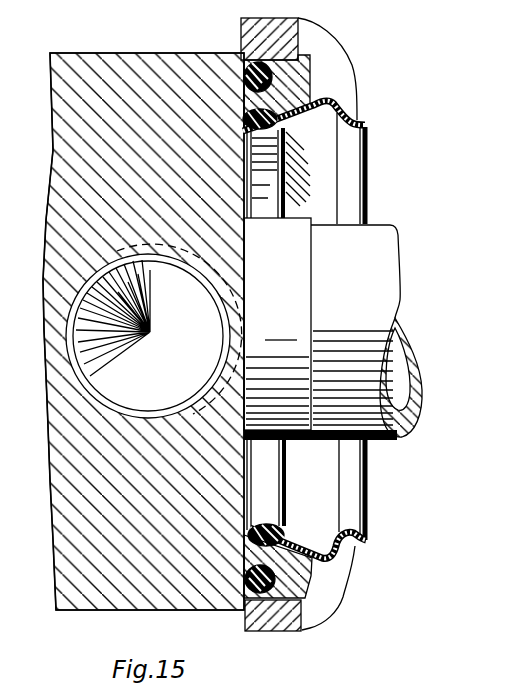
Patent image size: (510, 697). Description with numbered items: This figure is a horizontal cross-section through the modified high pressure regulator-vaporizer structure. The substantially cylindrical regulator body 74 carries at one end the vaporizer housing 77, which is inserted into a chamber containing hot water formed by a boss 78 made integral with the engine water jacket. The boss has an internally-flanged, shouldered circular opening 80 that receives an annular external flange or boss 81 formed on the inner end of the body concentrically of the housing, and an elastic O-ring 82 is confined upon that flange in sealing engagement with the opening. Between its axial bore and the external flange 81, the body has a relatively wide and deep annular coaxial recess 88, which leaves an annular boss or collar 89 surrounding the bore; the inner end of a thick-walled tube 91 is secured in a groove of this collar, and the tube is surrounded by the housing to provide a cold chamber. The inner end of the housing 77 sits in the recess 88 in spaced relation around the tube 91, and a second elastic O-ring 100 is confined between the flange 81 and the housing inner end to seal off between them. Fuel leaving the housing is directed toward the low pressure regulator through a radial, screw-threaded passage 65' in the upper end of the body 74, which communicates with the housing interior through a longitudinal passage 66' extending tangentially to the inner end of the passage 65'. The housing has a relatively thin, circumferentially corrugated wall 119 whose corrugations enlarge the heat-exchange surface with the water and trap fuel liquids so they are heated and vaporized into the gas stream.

The regulator body 74 is at (92, 54).
The O-ring 82 is at (247, 68).
The circular opening 80 is at (300, 51).
The housing wall 119 is at (366, 133).
The annular boss or collar 89 is at (302, 247).
The thick-walled tube 91 is at (393, 259).
The longitudinal passage or port 66' is at (152, 318).
The radial screw-threaded passage or port 65' is at (154, 331).
The annular coaxial recess 88 is at (248, 484).
The vaporizer housing 77 is at (367, 484).
The O-ring 100 is at (290, 538).
The external flange or boss 81 is at (307, 580).
The boss 78 is at (276, 630).